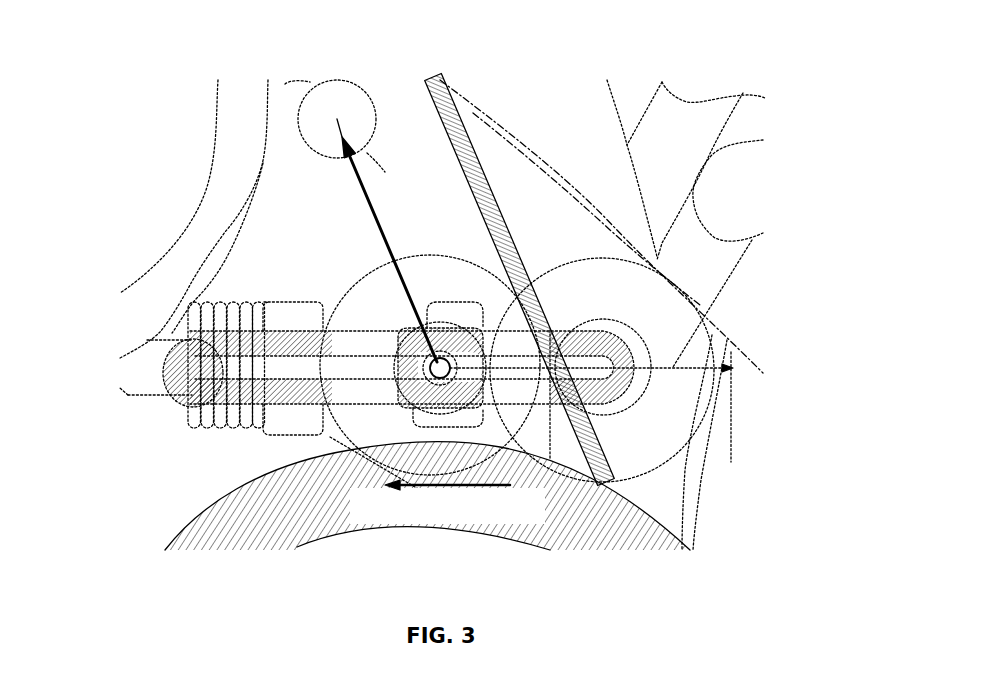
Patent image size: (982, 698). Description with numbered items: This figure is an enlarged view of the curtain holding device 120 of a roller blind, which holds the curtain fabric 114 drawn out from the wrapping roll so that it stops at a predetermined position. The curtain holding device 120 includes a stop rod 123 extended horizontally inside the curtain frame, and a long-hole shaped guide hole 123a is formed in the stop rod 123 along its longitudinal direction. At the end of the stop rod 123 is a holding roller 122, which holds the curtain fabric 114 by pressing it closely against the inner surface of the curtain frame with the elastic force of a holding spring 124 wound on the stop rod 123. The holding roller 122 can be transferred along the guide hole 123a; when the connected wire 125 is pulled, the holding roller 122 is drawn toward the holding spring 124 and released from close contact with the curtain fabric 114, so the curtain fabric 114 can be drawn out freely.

The curtain fabric 114 is at (483, 187).
The curtain holding device 120 is at (553, 290).
The holding roller 122 is at (527, 422).
The stop rod 123 is at (288, 392).
The guide hole 123a is at (297, 367).
The holding spring 124 is at (197, 422).
The wire 125 is at (367, 197).